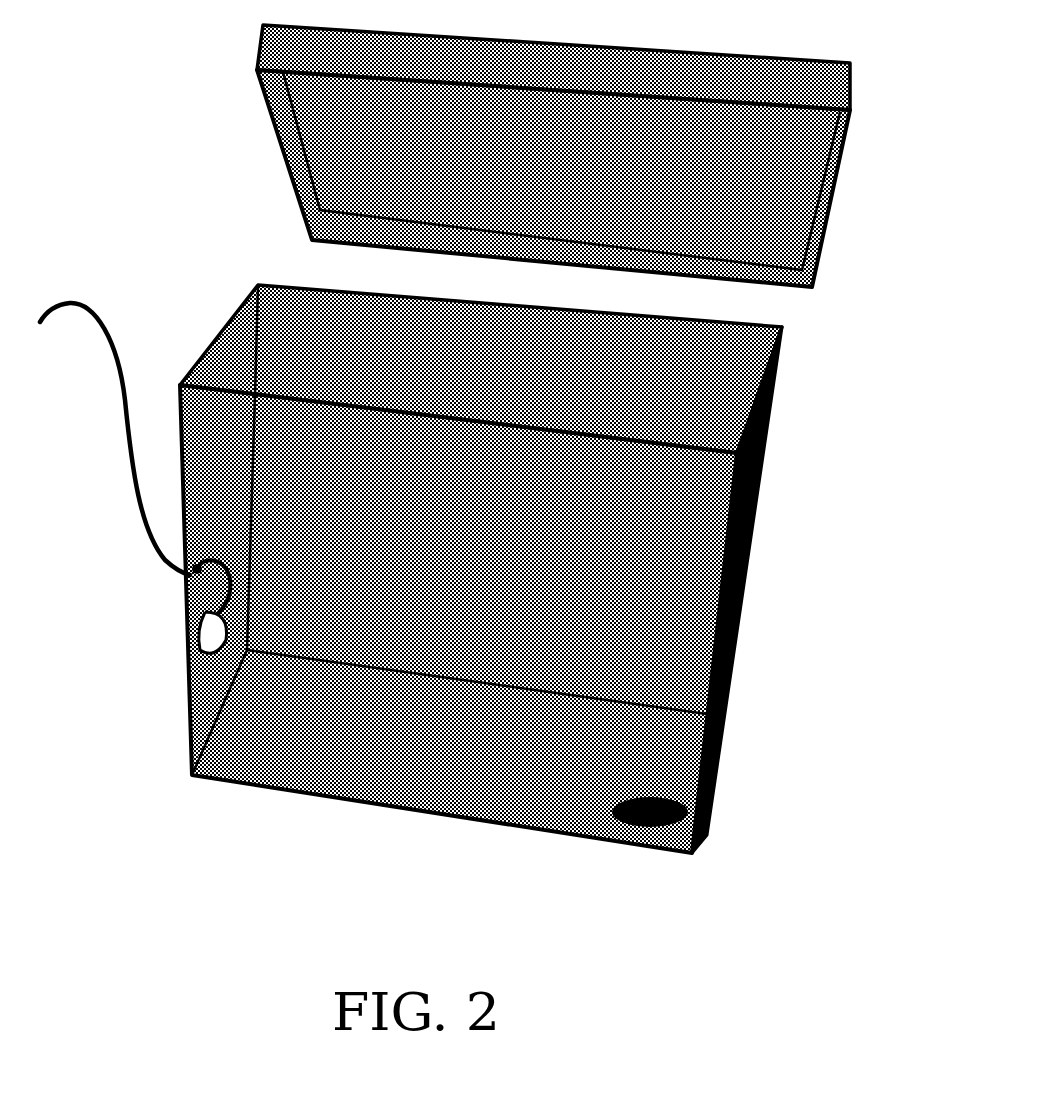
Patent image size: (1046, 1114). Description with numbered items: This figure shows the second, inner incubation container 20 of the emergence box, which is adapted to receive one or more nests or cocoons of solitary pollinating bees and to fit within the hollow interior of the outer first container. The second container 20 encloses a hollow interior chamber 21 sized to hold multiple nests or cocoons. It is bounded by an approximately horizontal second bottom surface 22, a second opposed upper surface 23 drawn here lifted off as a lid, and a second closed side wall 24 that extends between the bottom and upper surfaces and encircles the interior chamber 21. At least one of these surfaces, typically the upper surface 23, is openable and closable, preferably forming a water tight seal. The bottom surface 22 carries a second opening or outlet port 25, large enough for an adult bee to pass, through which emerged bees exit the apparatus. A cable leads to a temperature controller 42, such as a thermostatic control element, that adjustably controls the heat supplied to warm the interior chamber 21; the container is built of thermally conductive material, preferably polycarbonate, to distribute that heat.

The second inner incubation container 20 is at (111, 439).
The hollow interior chamber 21 is at (393, 385).
The second bottom surface 22 is at (431, 790).
The second opposed upper surface 23 is at (845, 188).
The second closed side wall 24 is at (748, 657).
The second opening or outlet port 25 is at (660, 845).
The temperature controller 42 is at (170, 627).